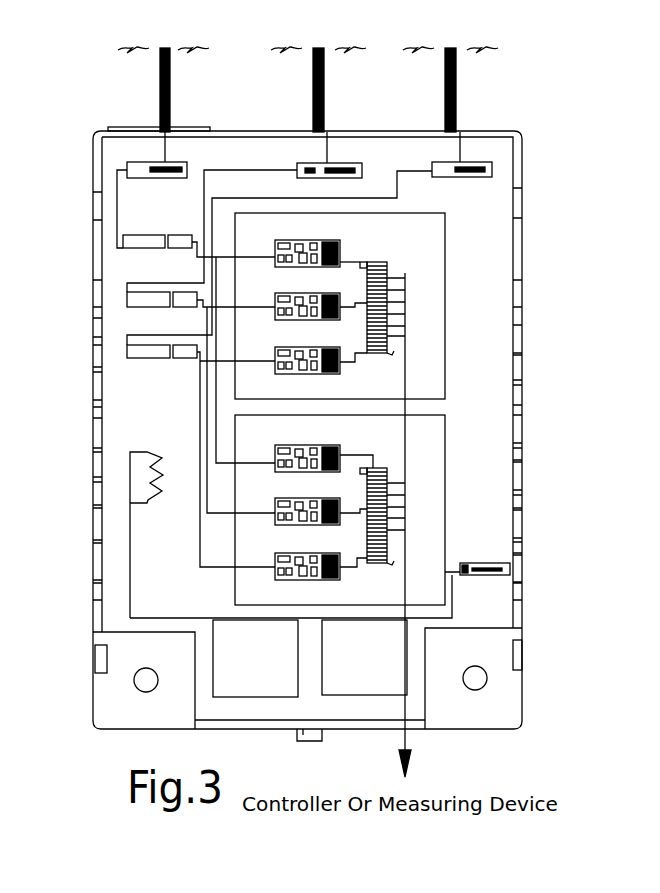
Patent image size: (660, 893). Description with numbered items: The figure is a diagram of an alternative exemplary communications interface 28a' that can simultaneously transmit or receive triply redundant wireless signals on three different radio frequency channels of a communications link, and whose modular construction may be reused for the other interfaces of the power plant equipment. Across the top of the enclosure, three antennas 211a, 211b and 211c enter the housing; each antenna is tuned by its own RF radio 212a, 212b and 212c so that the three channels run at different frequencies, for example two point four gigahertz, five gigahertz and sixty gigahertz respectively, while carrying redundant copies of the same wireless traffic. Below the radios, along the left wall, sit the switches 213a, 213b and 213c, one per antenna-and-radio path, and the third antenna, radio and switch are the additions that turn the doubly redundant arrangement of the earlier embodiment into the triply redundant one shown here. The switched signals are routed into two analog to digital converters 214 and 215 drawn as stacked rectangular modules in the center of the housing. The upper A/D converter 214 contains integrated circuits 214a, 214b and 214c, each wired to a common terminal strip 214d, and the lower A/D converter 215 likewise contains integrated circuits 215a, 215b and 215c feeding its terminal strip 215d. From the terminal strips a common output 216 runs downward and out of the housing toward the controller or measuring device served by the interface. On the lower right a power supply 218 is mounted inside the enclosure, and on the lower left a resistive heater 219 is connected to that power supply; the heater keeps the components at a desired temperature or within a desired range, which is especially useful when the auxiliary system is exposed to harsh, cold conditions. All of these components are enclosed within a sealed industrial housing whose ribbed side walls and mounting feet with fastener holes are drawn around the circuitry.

The antenna 211a is at (170, 91).
The antenna 211b is at (325, 73).
The antenna 211c is at (457, 73).
The RF radio 212a is at (170, 162).
The RF radio 212b is at (348, 163).
The RF radio 212c is at (443, 177).
The switch 213a is at (123, 249).
The switch 213b is at (127, 305).
The switch 213c is at (127, 358).
The analog to digital converter 214 is at (445, 230).
The integrated circuit 214a is at (343, 250).
The integrated circuit 214b is at (287, 320).
The A/D converter board 214c is at (287, 376).
The terminal strip 214d is at (388, 272).
The analog to digital converter 215 is at (445, 443).
The integrated circuit 215a is at (273, 453).
The integrated circuit 215b is at (313, 525).
The A/D converter board 215c is at (313, 580).
The terminal strip 215d is at (405, 470).
The output line to controller 216 is at (405, 368).
The power supply 218 is at (502, 565).
The resistive heater 219 is at (130, 476).
The communications interface 28a' is at (599, 295).